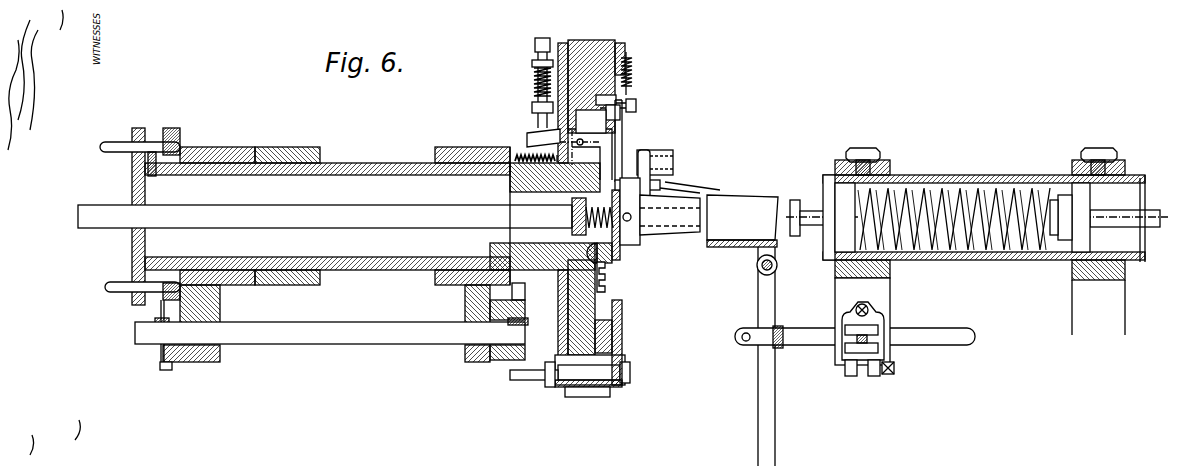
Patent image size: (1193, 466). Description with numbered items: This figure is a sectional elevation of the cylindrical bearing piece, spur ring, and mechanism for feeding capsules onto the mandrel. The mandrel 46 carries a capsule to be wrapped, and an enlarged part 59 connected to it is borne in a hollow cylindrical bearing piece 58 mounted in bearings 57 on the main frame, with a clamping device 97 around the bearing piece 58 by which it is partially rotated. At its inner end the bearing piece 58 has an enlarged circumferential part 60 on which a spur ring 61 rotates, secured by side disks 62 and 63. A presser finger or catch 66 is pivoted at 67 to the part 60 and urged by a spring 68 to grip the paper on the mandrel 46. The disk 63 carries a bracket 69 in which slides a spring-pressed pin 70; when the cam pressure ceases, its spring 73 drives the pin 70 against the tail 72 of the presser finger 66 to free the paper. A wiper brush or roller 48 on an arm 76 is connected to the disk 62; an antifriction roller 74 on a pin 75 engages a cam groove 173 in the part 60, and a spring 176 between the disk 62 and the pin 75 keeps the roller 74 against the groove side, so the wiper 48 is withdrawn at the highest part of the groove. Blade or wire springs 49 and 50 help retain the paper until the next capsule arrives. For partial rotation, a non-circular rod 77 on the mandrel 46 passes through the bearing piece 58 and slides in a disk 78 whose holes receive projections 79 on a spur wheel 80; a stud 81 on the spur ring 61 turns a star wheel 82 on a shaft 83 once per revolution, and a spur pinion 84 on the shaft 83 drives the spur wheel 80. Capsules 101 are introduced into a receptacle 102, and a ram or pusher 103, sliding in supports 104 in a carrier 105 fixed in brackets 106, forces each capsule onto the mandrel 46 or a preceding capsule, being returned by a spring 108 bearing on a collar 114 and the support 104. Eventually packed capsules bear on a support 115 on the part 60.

The mandrel 46 is at (680, 235).
The wiper brush or roller 48 is at (673, 166).
The blade or wire spring 49 is at (644, 232).
The blade or wire spring 50 is at (698, 195).
The bearings 57 is at (248, 141).
The cylindrical bearing piece 58 is at (406, 163).
The enlarged part 59 is at (510, 248).
The enlarged circumferential part 60 is at (596, 311).
The spur ring 61 is at (590, 40).
The side disk 62 is at (626, 48).
The side disk 63 is at (562, 43).
The presser finger or catch 66 is at (660, 186).
The pivot 67 is at (572, 147).
The spring 68 is at (520, 154).
The bracket 69 is at (534, 88).
The spring-pressed pin 70 is at (532, 107).
The tail of presser finger 72 is at (536, 138).
The spring 73 is at (534, 74).
The antifriction roller 74 is at (612, 115).
The pin 75 is at (636, 104).
The arm 76 is at (622, 143).
The rod 77 is at (325, 216).
The disk 78 is at (132, 178).
The projections 79 is at (102, 147).
The spur wheel 80 is at (172, 128).
The stud or projection 81 is at (515, 380).
The star wheel 82 is at (525, 300).
The shaft 83 is at (326, 344).
The spur pinion 84 is at (160, 357).
The clamping device 97 is at (316, 147).
The capsule 101 is at (742, 221).
The receptacle 102 is at (752, 247).
The ram or pusher 103 is at (797, 202).
The supports 104 is at (842, 233).
The carrier 105 is at (982, 175).
The brackets 106 is at (888, 278).
The spring 108 is at (940, 252).
The collar 114 is at (1070, 190).
The support 115 is at (612, 262).
The cam groove 173 is at (604, 125).
The spring 176 is at (632, 77).